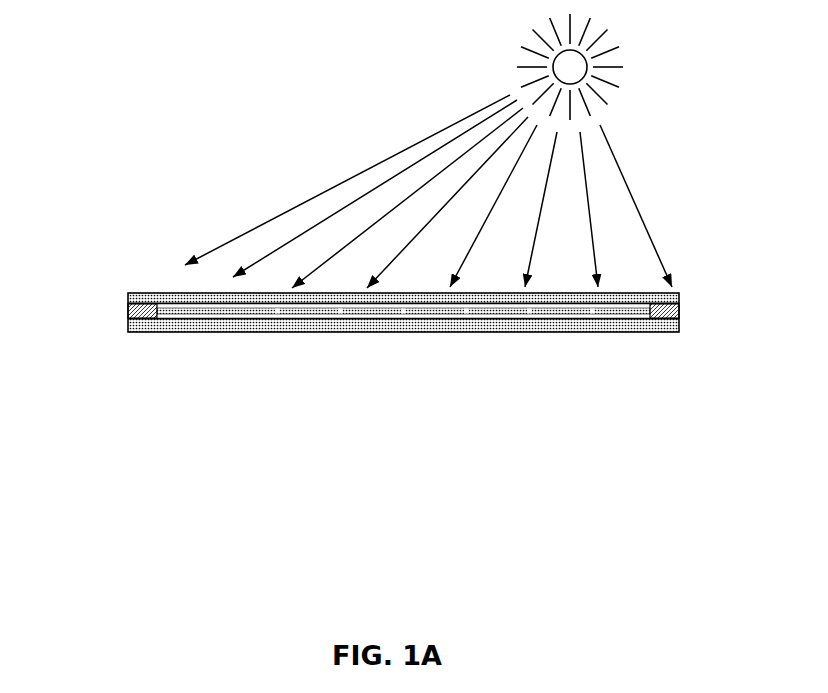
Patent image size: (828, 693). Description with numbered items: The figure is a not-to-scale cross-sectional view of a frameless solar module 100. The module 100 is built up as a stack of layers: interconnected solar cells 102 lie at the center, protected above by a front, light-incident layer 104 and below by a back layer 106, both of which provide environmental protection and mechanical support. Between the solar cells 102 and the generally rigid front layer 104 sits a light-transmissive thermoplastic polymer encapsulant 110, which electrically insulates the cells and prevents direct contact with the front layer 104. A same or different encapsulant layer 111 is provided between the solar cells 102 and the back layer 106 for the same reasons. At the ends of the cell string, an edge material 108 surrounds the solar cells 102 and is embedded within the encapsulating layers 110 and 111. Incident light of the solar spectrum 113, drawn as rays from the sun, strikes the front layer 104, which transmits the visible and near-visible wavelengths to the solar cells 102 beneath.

The frameless solar module 100 is at (150, 453).
The solar cells 102 is at (432, 312).
The front layer 104 is at (213, 296).
The back layer 106 is at (213, 324).
The edge material 108 is at (135, 311).
The encapsulant 110 is at (178, 304).
The encapsulant layer 111 is at (178, 316).
The solar spectrum 113 is at (400, 148).